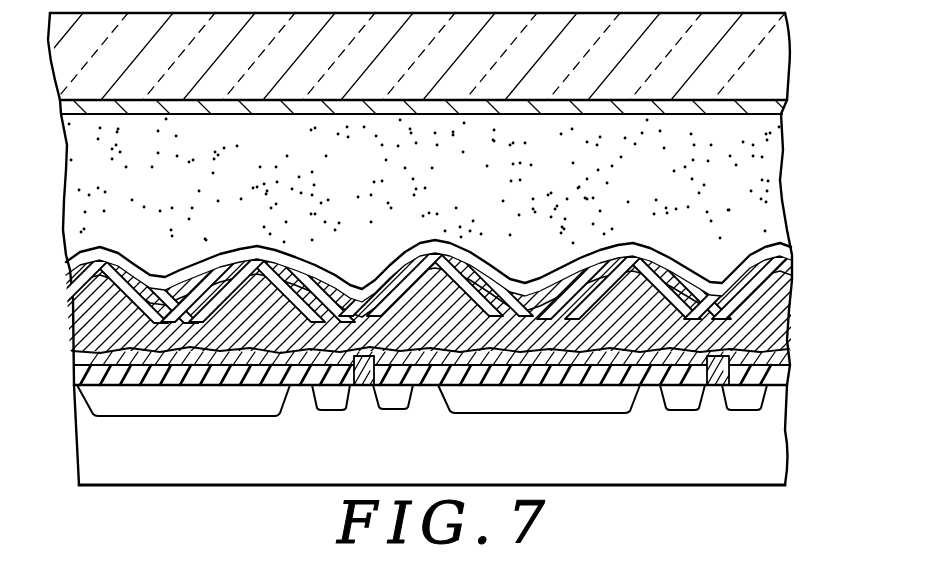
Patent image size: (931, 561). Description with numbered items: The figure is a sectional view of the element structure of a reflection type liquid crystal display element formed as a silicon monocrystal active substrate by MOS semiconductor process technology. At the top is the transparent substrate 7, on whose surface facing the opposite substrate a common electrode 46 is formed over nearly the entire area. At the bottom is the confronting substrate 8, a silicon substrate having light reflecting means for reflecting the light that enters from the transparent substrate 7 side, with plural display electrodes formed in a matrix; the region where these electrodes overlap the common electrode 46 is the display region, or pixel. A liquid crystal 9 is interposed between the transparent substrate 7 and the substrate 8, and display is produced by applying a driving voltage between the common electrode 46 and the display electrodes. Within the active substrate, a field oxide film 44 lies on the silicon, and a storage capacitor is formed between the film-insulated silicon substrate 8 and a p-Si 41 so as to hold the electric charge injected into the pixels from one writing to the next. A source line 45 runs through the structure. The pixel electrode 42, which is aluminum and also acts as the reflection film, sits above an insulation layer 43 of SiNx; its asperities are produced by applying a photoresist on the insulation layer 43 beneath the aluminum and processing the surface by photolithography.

The transparent substrate 7 is at (766, 52).
The common electrode 46 is at (764, 103).
The liquid crystal 9 is at (742, 176).
The pixel electrode 42 is at (791, 266).
The insulation layer 43 is at (80, 335).
The source line 45 is at (782, 316).
The p-Si 41 is at (790, 364).
The field oxide film 44 is at (80, 370).
The substrate 8 is at (756, 449).